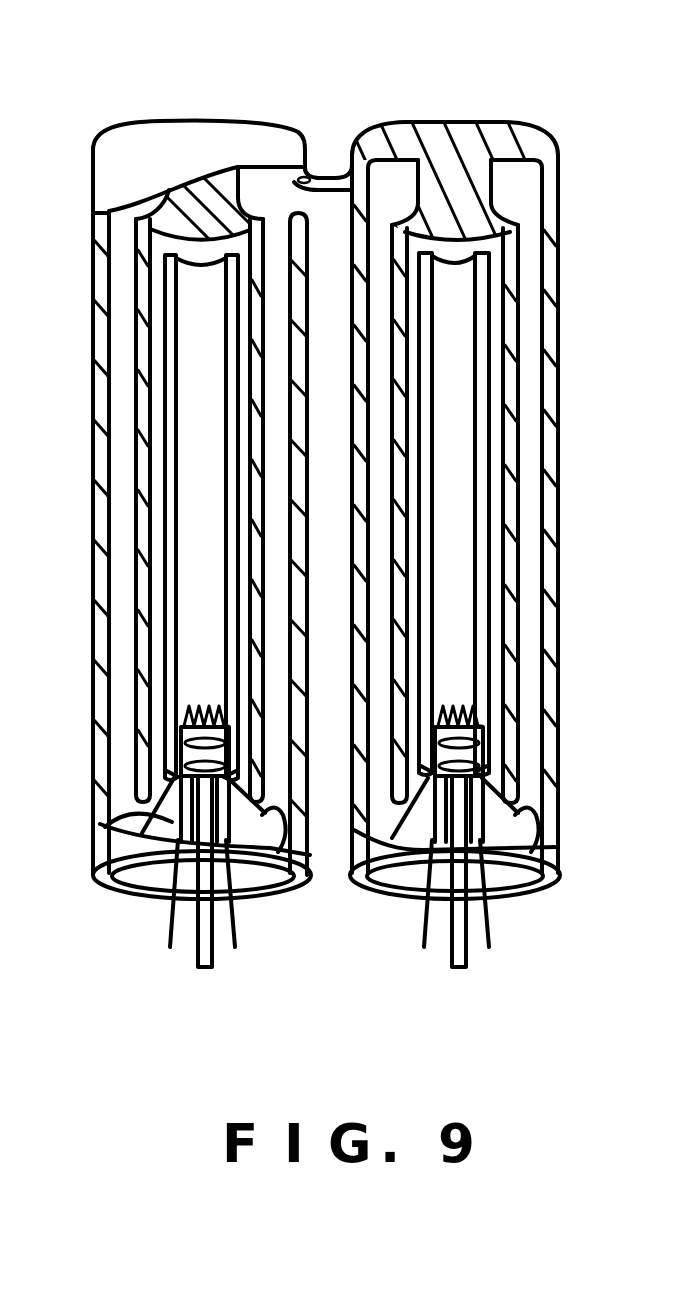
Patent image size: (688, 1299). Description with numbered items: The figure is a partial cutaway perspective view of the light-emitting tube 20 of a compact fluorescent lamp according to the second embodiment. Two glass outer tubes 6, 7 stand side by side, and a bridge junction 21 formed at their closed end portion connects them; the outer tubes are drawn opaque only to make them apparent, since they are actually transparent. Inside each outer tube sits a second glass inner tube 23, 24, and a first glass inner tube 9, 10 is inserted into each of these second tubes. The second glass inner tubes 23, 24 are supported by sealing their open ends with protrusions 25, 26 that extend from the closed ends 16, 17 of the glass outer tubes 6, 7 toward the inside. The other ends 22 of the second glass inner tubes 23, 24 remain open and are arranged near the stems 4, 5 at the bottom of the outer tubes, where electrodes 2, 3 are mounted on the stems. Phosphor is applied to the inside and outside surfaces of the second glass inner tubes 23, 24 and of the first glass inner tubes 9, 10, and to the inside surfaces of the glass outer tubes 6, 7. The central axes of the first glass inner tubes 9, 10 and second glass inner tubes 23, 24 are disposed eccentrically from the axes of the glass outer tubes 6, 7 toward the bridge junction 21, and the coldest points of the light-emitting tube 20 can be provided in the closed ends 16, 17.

The electrode of first lamp 2 is at (190, 703).
The electrode of second lamp 3 is at (467, 713).
The stem 4 is at (100, 824).
The stem 5 is at (500, 795).
The glass outer tube 6 is at (92, 257).
The glass outer tube 7 is at (557, 173).
The first glass inner tube 9 is at (167, 465).
The first glass inner tube 10 is at (480, 425).
The closed end 16 is at (107, 161).
The closed end 17 is at (507, 133).
The light-emitting tube 20 is at (550, 110).
The bridge junction 21 is at (323, 207).
The other end 22 is at (267, 898).
The second glass inner tube 23 is at (137, 350).
The second glass inner tube 24 is at (515, 280).
The protrusion 25 is at (196, 190).
The protrusion 26 is at (447, 180).